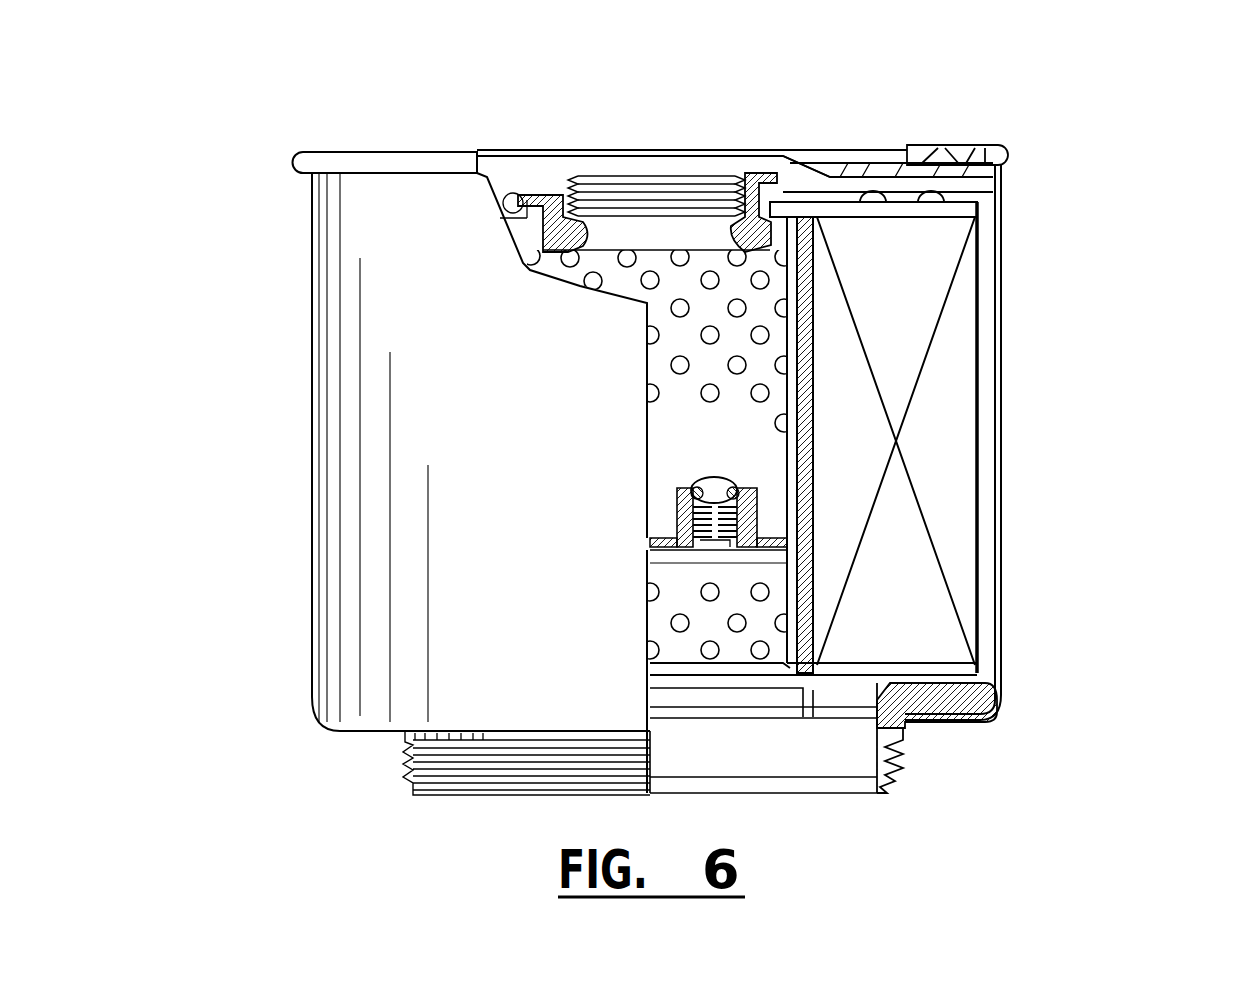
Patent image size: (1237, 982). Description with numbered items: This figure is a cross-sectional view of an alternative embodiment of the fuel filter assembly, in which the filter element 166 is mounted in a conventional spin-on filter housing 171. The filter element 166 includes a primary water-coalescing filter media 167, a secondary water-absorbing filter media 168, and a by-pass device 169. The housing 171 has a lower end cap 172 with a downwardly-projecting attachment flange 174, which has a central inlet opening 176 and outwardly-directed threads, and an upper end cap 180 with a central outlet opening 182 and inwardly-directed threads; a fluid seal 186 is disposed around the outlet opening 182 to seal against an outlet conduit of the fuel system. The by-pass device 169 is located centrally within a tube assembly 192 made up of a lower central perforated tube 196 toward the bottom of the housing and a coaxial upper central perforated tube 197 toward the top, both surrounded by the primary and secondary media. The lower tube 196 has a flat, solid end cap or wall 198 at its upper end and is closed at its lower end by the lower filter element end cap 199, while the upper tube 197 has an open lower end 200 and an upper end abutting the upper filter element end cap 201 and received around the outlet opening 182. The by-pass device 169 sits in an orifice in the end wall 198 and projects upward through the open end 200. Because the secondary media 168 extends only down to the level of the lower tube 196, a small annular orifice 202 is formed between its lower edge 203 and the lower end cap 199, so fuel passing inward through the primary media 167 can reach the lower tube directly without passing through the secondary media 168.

The filter element 166 is at (950, 413).
The primary water-coalescing filter media 167 is at (910, 257).
The secondary water-absorbing filter media 168 is at (817, 370).
The by-pass device 169 is at (763, 512).
The filter housing 171 is at (1003, 545).
The lower end cap 172 is at (977, 723).
The attachment flange 174 is at (900, 753).
The central inlet opening 176 is at (793, 752).
The upper end cap 180 is at (857, 175).
The central outlet opening 182 is at (700, 172).
The fluid seal 186 is at (570, 233).
The tube assembly 192 is at (753, 320).
The lower central perforated tube 196 is at (767, 627).
The upper central perforated tube 197 is at (763, 455).
The end cap or wall 198 is at (767, 552).
The lower filter element end cap 199 is at (887, 787).
The open lower end 200 is at (673, 550).
The upper filter element end cap 201 is at (927, 167).
The annular orifice 202 is at (807, 604).
The lower edge 203 is at (817, 549).